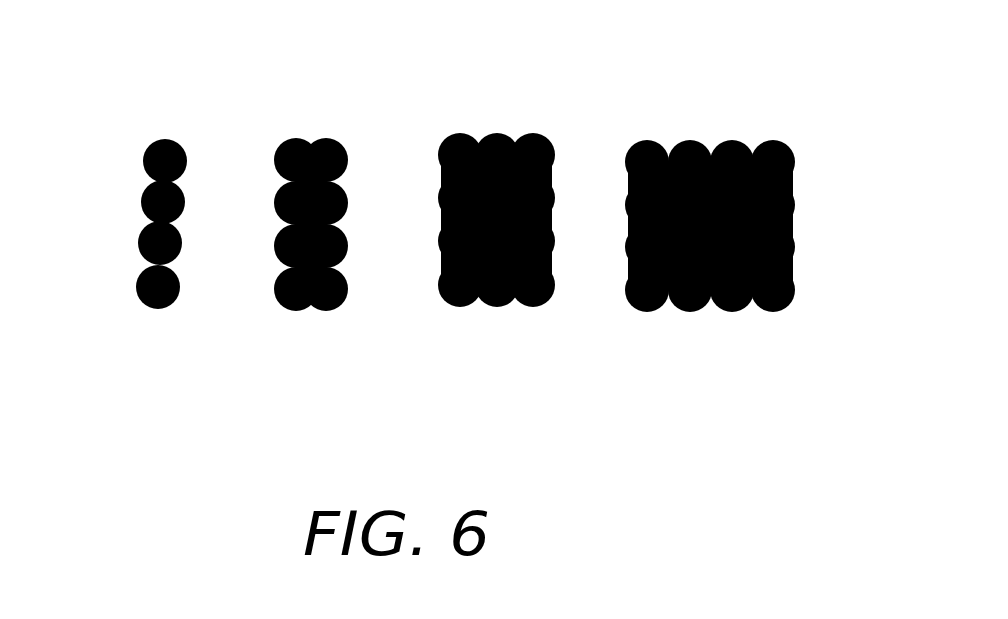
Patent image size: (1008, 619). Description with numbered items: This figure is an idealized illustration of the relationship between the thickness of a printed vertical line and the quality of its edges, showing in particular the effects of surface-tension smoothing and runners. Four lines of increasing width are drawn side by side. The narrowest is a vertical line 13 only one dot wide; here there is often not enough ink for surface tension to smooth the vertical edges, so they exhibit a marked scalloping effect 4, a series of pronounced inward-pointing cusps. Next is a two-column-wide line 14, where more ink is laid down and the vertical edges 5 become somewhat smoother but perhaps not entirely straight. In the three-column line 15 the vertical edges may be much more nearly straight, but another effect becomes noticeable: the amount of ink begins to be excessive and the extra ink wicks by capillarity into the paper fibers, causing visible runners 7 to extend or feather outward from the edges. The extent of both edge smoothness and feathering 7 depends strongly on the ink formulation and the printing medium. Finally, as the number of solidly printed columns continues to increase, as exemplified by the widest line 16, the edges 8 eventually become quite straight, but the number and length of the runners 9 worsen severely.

The vertical line 13 is at (120, 177).
The two-column-wide line 14 is at (275, 206).
The three-column line 15 is at (485, 206).
The solidly printed columns 16 is at (740, 163).
The scalloping effect 4 is at (140, 182).
The vertical edges 5 is at (269, 259).
The runners 7 is at (441, 232).
The edges 8 is at (623, 200).
The runners 9 is at (626, 233).